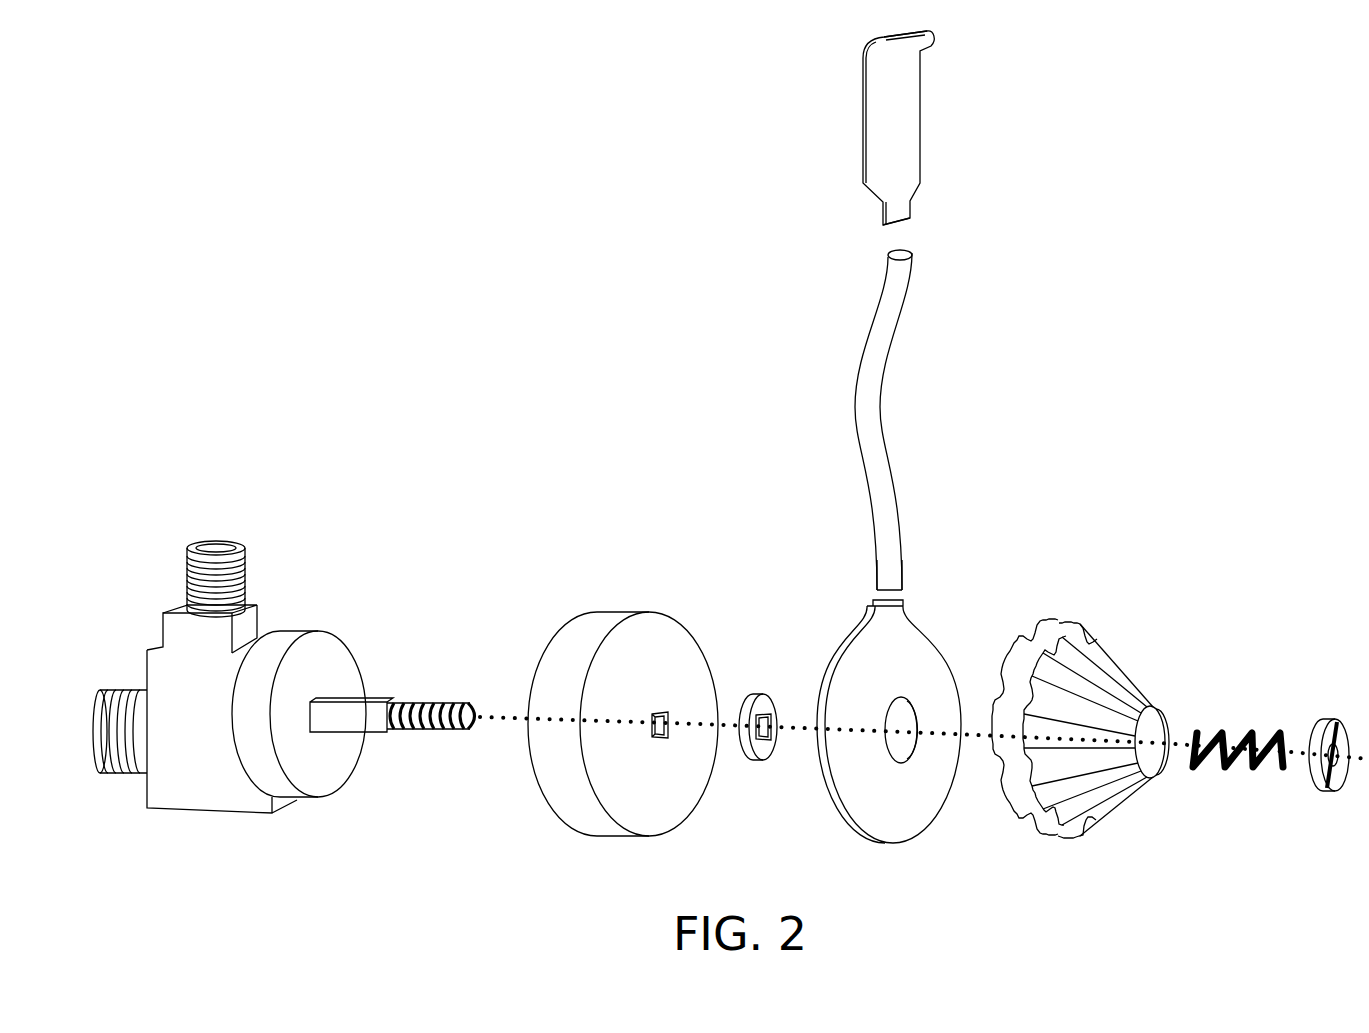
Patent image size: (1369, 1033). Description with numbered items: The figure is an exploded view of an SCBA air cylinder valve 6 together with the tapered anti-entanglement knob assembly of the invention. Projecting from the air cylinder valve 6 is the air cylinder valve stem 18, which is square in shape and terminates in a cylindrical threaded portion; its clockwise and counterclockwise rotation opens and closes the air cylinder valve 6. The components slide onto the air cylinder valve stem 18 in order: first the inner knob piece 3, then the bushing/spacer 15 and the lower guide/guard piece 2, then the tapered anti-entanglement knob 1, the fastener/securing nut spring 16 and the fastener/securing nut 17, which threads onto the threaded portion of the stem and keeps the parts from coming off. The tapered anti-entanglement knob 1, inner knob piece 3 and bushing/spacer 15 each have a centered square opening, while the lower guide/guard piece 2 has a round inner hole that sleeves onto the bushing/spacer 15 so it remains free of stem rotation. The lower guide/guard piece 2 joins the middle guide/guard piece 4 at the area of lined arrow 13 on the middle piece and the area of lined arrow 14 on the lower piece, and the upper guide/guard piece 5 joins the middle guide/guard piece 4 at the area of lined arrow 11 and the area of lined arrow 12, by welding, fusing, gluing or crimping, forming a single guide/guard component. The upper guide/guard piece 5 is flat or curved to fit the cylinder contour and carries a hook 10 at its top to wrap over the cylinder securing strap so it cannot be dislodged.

The tapered anti-entanglement knob 1 is at (1073, 688).
The lower guide/guard piece 2 is at (919, 655).
The inner knob piece 3 is at (623, 706).
The middle guide/guard piece 4 is at (836, 420).
The upper guide/guard piece 5 is at (912, 153).
The air cylinder valve 6 is at (198, 752).
The hook 10 is at (913, 45).
The area of lined arrow of upper guide/guard piece 11 is at (944, 226).
The area of lined arrow of middle guide/guard piece 12 is at (856, 262).
The area of lined arrow of middle guide/guard piece 13 is at (852, 564).
The area of lined arrow of lower guide/guard piece 14 is at (923, 586).
The bushing/spacer 15 is at (765, 700).
The fastener/securing nut spring 16 is at (1250, 738).
The fastener/securing nut 17 is at (1327, 735).
The air cylinder valve stem 18 is at (372, 722).